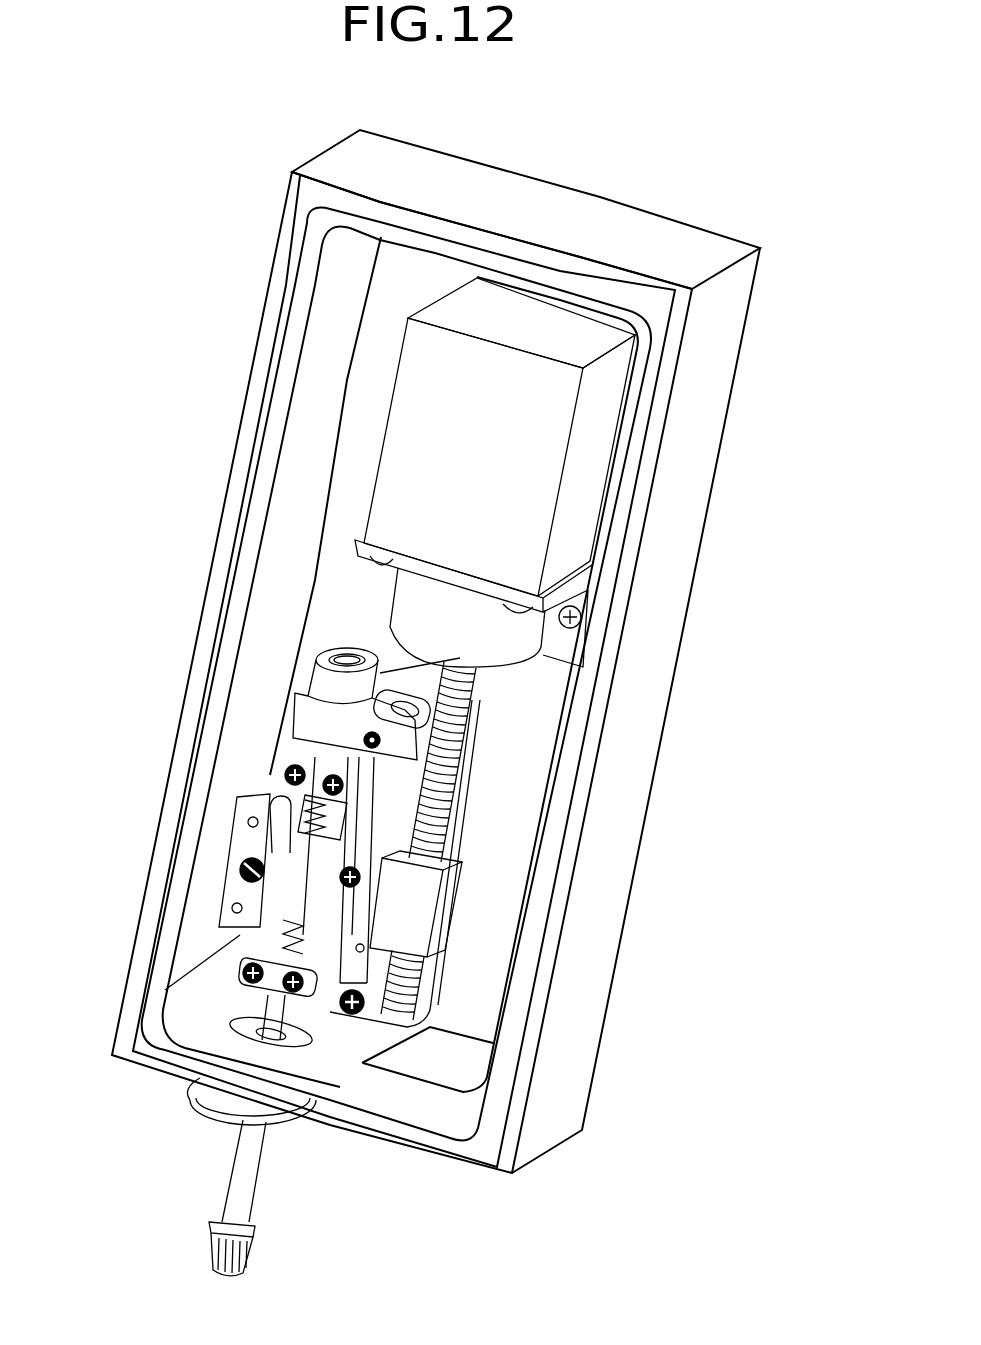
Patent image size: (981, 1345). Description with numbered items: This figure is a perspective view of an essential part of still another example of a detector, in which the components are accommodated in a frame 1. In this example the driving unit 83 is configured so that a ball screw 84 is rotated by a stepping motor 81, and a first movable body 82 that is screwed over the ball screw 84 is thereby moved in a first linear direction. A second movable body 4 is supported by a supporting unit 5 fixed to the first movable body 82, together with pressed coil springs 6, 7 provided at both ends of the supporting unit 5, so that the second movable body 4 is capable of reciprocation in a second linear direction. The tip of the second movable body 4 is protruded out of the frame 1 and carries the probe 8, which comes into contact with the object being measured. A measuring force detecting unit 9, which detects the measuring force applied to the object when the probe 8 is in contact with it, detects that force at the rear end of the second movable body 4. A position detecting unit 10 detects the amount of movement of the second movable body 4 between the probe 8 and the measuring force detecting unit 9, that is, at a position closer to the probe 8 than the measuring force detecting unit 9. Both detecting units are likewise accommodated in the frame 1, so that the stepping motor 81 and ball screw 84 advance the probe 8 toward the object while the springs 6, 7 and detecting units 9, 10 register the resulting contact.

The frame 1 is at (727, 377).
The second movable body 4 is at (237, 1010).
The supporting unit 5 is at (250, 838).
The coil spring 6 is at (243, 973).
The coil spring 7 is at (265, 785).
The probe 8 is at (253, 1255).
The measuring force detecting unit 9 is at (327, 678).
The position detecting unit 10 is at (242, 864).
The stepping motor 81 is at (595, 442).
The first movable body 82 is at (447, 898).
The driving unit 83 is at (587, 510).
The ball screw 84 is at (477, 683).